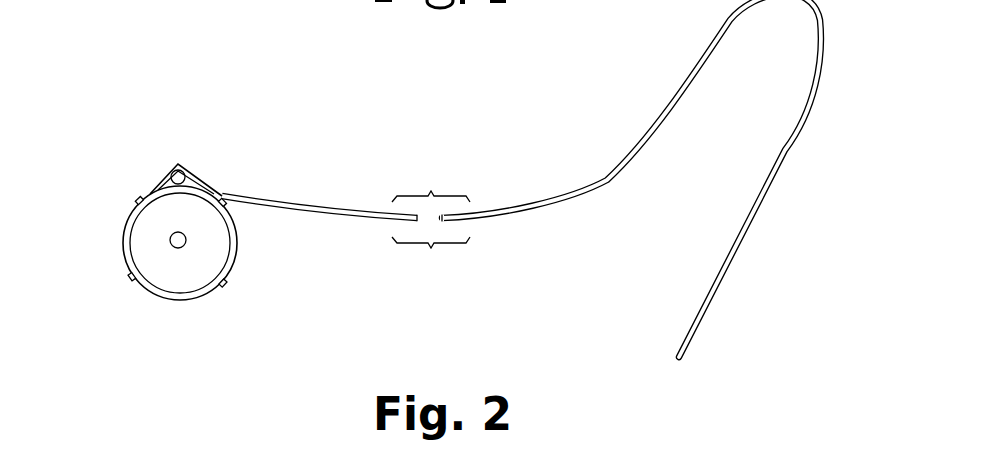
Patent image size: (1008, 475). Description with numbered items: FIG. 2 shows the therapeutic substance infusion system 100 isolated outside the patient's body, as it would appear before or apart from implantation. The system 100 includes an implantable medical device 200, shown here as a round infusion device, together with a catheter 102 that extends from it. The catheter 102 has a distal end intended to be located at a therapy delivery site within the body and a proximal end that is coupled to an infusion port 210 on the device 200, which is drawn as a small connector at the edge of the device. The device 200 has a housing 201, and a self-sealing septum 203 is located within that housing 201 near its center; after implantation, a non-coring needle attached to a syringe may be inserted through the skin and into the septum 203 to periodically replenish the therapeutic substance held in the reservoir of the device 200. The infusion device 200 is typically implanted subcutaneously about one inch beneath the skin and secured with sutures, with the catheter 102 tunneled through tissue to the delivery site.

The hearing protection device 100 is at (300, 118).
The catheter 102 is at (606, 178).
The implantable medical device 200 is at (118, 223).
The housing 201 is at (143, 257).
The self-sealing septum 203 is at (174, 249).
The infusion port 210 is at (218, 188).